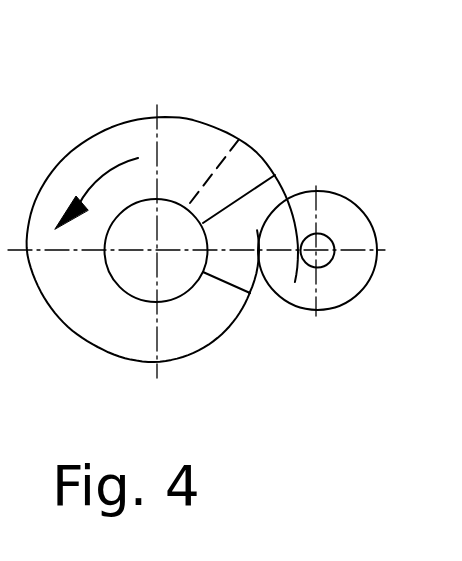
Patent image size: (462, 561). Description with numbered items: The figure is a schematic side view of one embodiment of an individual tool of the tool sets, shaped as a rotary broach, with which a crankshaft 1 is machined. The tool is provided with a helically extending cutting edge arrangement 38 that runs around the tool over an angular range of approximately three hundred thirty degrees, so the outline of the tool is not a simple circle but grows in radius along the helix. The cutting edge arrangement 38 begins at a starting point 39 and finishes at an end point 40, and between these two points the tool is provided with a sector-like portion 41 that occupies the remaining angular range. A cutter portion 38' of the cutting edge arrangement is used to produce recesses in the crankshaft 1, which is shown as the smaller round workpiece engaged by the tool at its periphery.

The cutting edge arrangement 38 is at (162, 210).
The cutter portion 38' is at (287, 116).
The end point 40 is at (235, 232).
The sector-like portion 41 is at (256, 230).
The starting point 39 is at (250, 293).
The crankshaft 1 is at (358, 237).